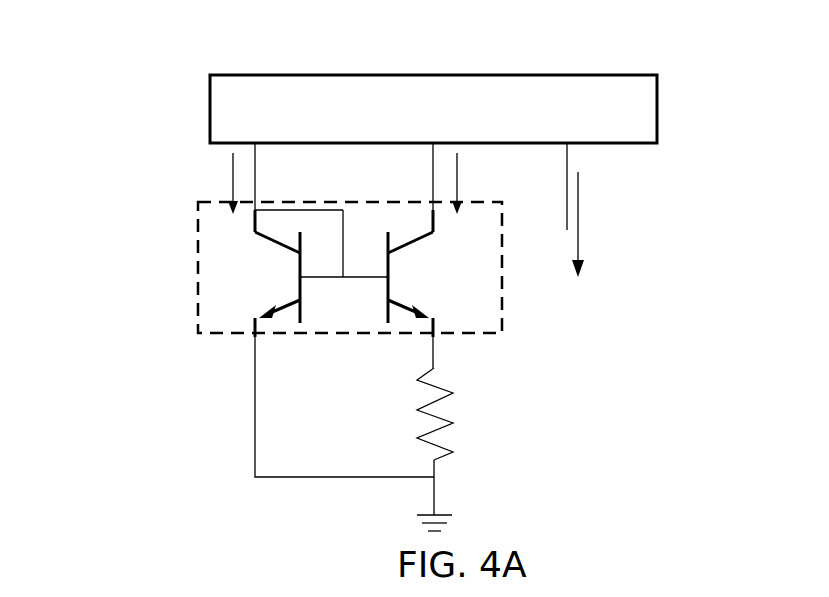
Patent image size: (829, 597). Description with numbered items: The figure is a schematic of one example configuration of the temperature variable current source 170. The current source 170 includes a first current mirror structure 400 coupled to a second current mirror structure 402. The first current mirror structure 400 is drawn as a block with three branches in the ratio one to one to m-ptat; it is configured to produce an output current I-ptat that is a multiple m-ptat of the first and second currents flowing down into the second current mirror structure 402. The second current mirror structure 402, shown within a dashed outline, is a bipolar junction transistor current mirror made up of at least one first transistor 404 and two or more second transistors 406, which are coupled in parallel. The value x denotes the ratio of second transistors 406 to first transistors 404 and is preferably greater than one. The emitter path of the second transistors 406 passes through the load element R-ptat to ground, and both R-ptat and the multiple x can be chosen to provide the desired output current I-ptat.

The temperature variable current source 170 is at (130, 45).
The first current mirror structure 400 is at (603, 75).
The second current mirror structure 402 is at (198, 233).
The first transistor 404 is at (298, 288).
The second transistor 406 is at (383, 292).